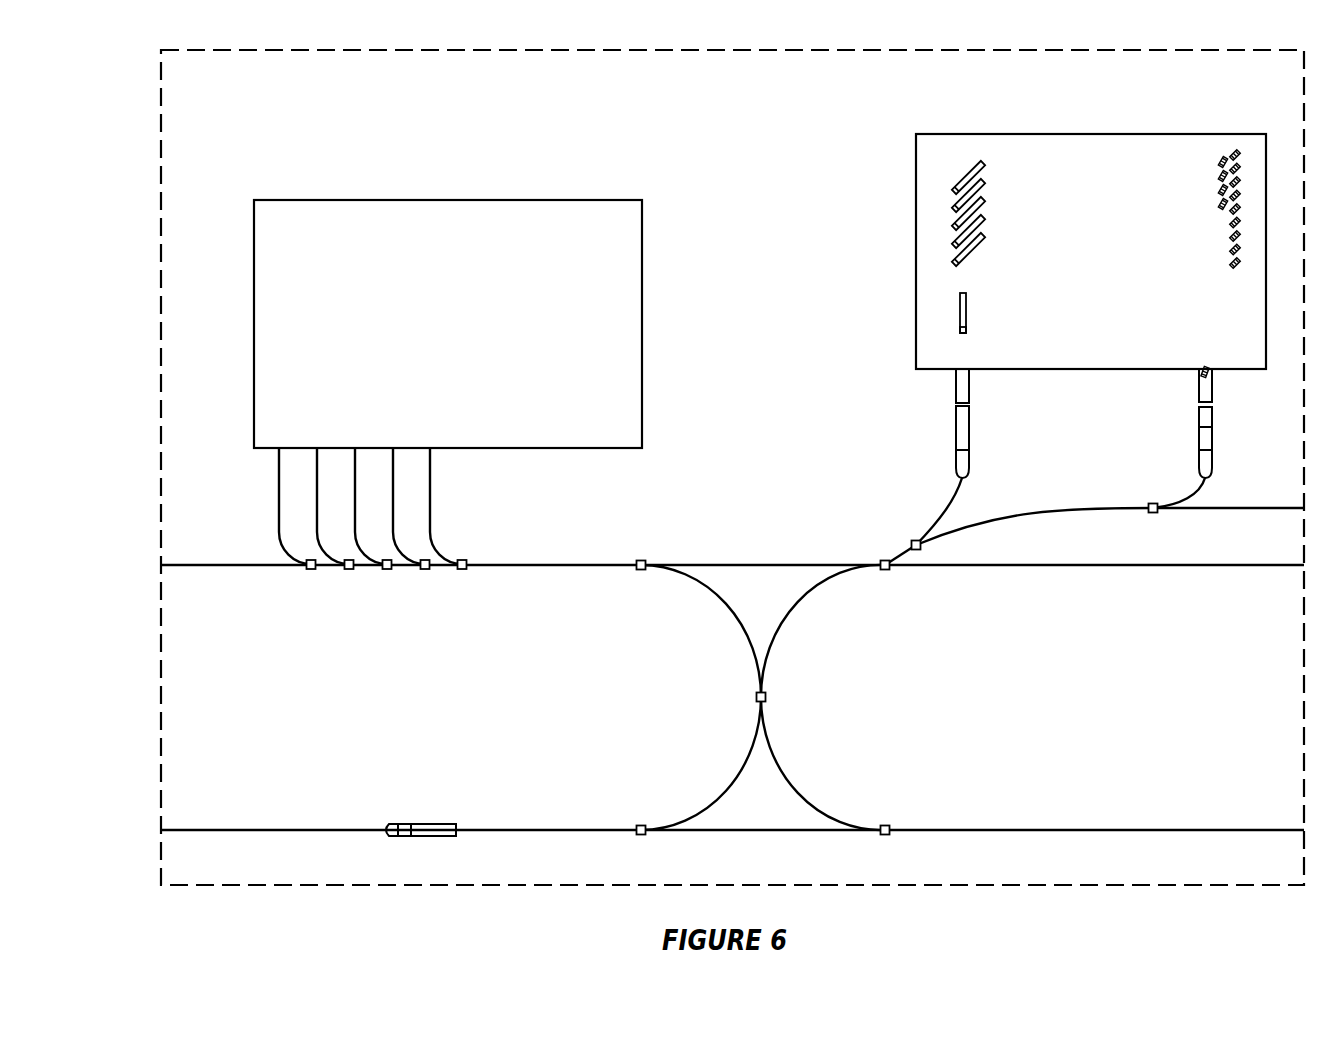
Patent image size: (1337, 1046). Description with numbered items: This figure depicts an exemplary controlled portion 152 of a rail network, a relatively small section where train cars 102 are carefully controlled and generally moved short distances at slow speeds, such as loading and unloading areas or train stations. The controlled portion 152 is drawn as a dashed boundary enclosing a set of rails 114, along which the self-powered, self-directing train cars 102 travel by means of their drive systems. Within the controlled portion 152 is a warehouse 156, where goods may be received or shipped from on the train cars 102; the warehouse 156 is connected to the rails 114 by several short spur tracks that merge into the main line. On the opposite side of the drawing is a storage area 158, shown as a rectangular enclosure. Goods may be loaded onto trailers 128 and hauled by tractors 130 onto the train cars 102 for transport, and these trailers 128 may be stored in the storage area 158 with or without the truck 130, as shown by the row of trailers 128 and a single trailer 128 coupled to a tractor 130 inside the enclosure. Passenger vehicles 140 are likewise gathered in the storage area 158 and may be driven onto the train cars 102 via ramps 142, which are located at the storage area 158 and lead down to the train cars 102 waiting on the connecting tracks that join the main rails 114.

The train car 102 is at (955, 430).
The rails 114 is at (1117, 567).
The trailers 128 is at (984, 164).
The tractors 130 is at (966, 328).
The passenger vehicles 140 is at (1222, 195).
The ramps 142 is at (969, 388).
The controlled portion 152 is at (161, 158).
The warehouse 156 is at (465, 200).
The storage area 158 is at (916, 223).